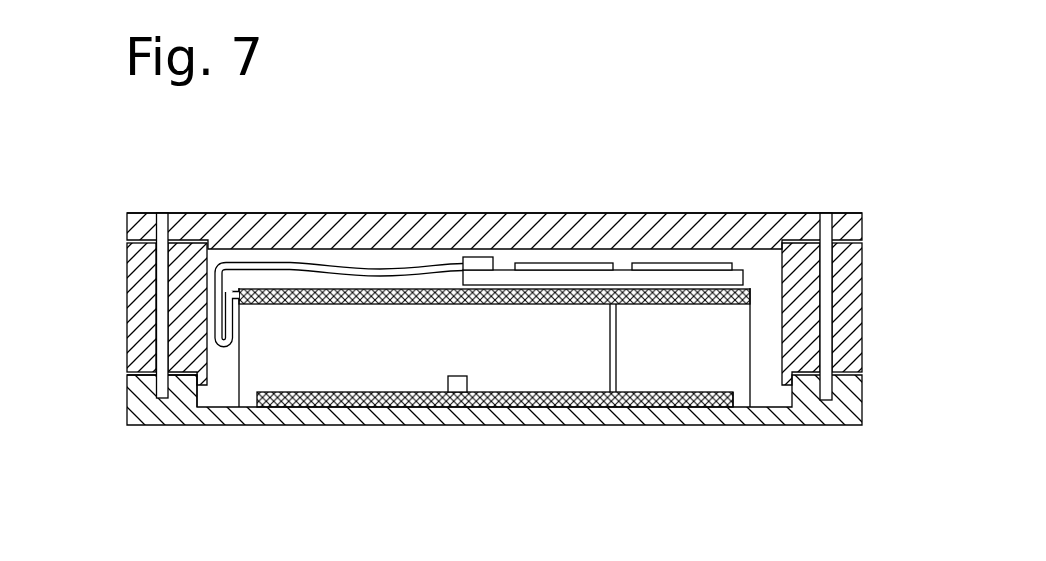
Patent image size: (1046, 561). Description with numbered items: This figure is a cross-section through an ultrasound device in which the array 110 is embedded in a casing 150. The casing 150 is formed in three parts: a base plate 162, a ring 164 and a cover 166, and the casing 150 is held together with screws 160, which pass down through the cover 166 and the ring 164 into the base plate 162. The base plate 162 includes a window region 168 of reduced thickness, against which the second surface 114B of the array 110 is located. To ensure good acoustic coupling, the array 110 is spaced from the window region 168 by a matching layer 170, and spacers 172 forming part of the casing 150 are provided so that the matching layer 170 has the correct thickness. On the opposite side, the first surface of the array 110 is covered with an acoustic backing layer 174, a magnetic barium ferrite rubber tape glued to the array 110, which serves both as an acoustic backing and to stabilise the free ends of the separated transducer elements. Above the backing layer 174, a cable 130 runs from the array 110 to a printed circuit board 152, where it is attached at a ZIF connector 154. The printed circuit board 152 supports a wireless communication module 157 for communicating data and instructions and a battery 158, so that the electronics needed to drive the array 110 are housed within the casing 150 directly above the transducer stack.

The array 110 is at (727, 368).
The second surface 114B is at (497, 390).
The cable 130 is at (370, 268).
The casing 150 is at (207, 212).
The printed circuit board 152 is at (618, 270).
The ZIF connector 154 is at (482, 267).
The wireless communication module 157 is at (563, 263).
The battery 158 is at (677, 263).
The screws 160 is at (163, 263).
The base plate 162 is at (137, 400).
The ring 164 is at (136, 302).
The cover 166 is at (127, 219).
The window region 168 is at (207, 427).
The matching layer 170 is at (632, 407).
The spacers 172 is at (740, 407).
The acoustic backing layer 174 is at (322, 290).